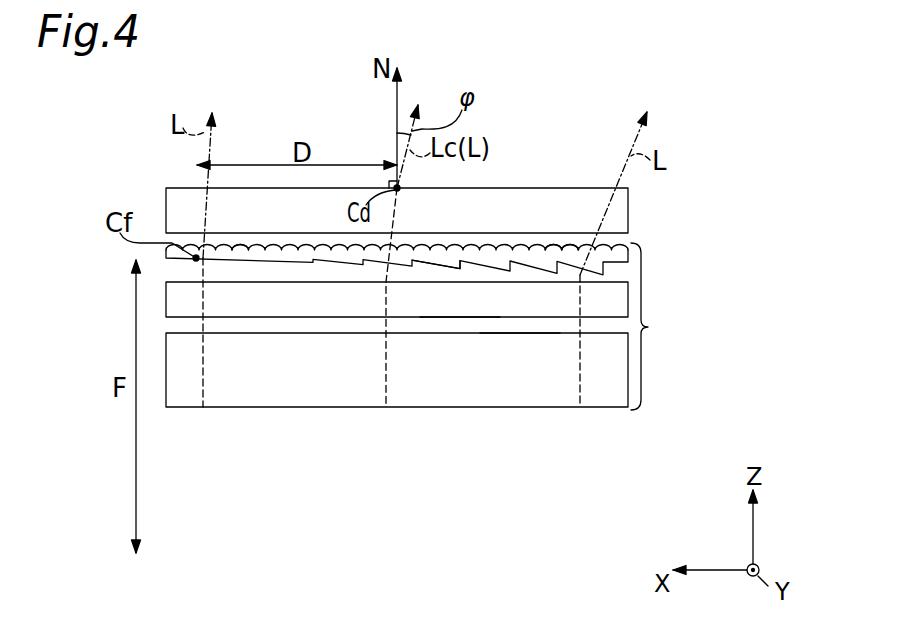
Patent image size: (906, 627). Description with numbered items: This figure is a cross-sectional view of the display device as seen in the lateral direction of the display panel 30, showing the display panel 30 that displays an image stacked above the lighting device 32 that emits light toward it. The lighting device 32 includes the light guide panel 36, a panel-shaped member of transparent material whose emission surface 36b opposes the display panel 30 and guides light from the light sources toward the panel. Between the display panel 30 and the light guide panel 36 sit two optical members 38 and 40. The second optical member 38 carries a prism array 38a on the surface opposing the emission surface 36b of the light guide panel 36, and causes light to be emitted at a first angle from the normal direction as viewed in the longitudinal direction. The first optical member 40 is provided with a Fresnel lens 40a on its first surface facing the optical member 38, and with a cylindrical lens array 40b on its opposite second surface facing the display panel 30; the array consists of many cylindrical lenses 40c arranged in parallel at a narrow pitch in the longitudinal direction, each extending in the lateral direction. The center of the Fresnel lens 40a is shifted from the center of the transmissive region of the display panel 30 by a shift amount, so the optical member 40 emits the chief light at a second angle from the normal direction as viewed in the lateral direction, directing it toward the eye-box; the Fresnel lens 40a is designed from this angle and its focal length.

The display panel 30 is at (628, 210).
The optical member (first optical member) 40 is at (491, 251).
The Fresnel lens 40a is at (427, 263).
The cylindrical lens array 40b is at (556, 251).
The cylindrical lenses 40c is at (240, 249).
The optical member (second optical member) 38 is at (302, 310).
The prism array 38a is at (460, 318).
The light guide panel 36 is at (302, 387).
The emission surface 36b is at (510, 332).
The lighting device 32 is at (659, 326).